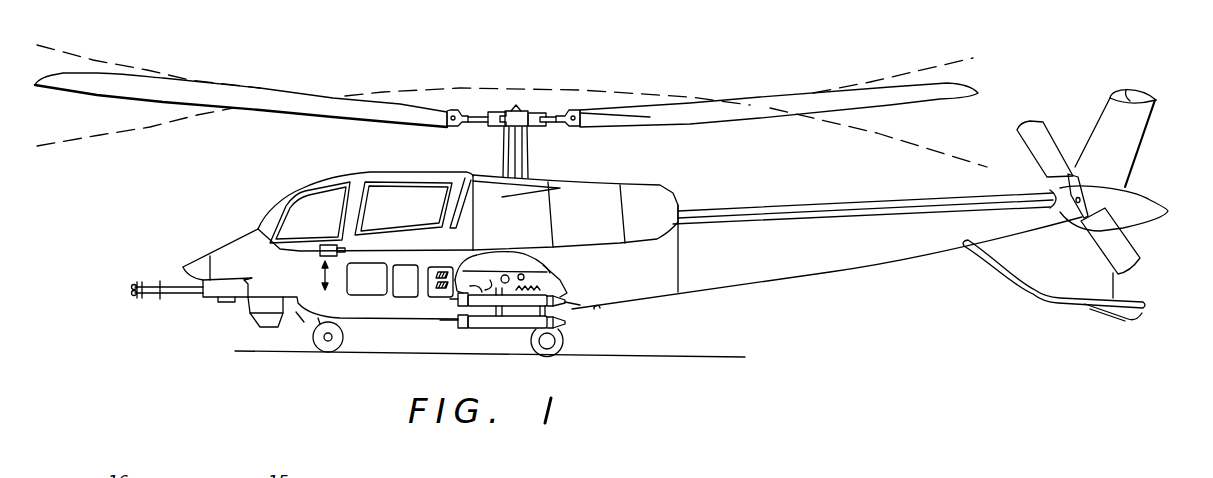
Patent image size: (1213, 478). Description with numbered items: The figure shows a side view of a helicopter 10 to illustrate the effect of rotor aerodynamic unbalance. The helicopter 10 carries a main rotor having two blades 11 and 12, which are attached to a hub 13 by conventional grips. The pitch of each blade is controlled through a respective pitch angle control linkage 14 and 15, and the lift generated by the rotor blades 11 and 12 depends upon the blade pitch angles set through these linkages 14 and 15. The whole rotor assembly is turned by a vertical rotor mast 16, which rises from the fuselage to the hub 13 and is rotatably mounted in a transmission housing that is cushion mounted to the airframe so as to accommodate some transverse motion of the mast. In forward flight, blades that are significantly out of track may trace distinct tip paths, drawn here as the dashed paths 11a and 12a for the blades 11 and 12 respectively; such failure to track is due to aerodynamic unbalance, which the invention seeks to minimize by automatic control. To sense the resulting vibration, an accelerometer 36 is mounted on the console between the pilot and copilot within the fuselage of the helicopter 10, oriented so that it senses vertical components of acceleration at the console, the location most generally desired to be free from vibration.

The helicopter 10 is at (681, 179).
The rotor blade 11 is at (130, 88).
The tip path 11a is at (187, 118).
The rotor blade 12 is at (898, 100).
The tip path 12a is at (905, 73).
The hub 13 is at (516, 108).
The pitch angle control linkage 14 is at (503, 148).
The pitch angle control linkage 15 is at (529, 147).
The rotor mast 16 is at (516, 159).
The accelerometer 36 is at (331, 245).